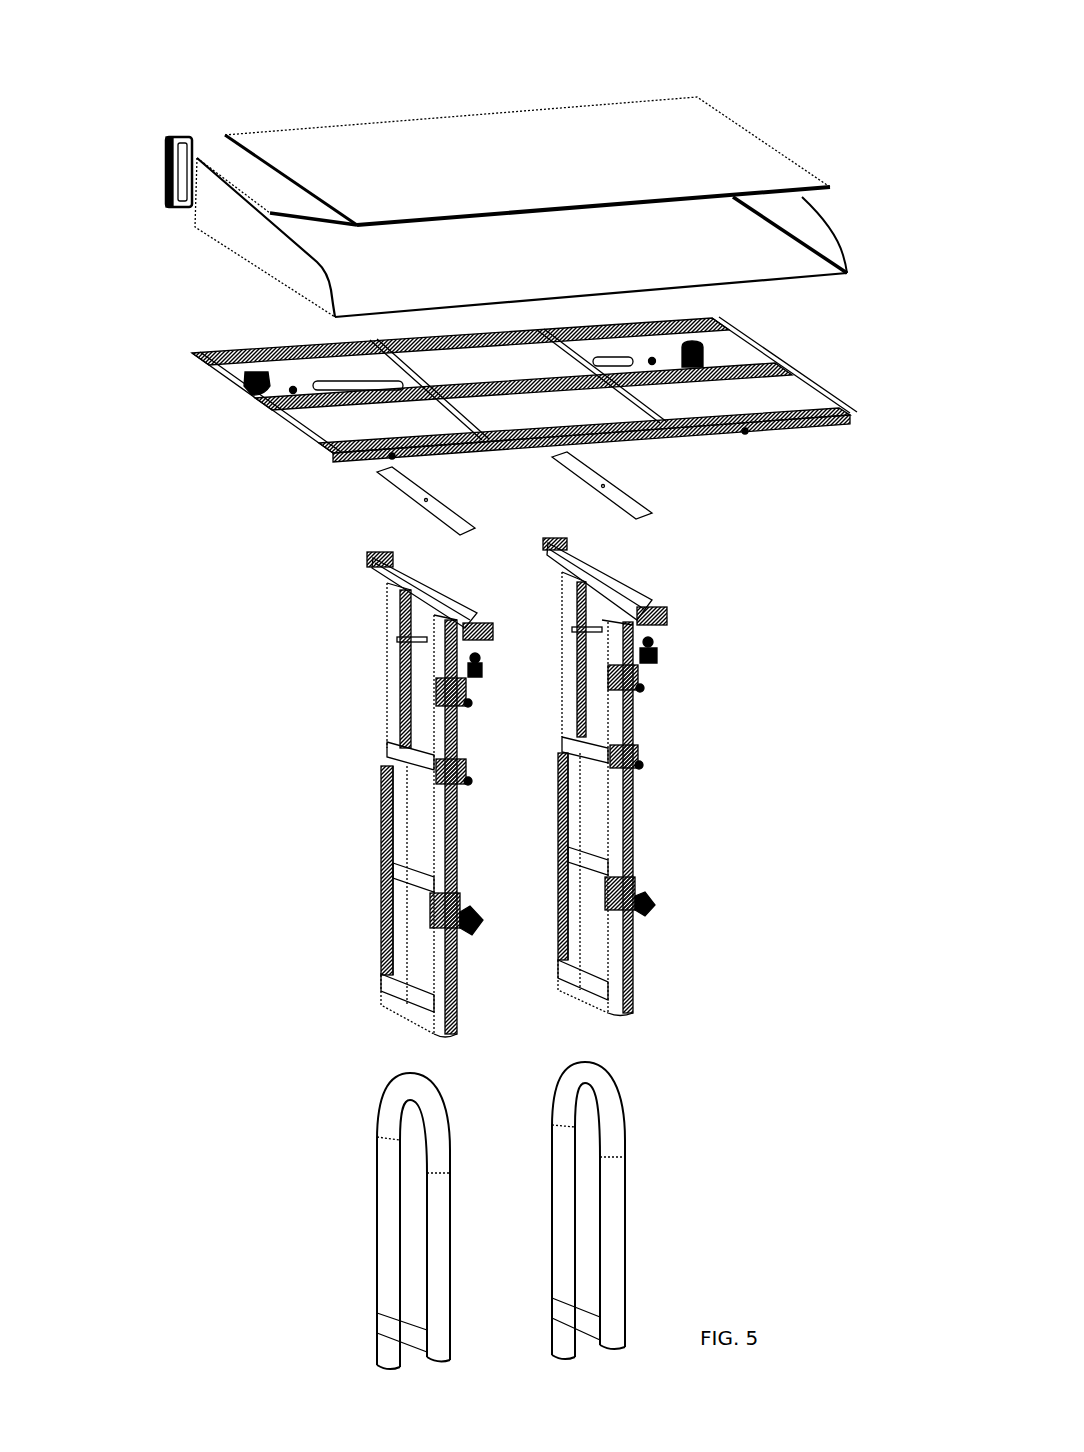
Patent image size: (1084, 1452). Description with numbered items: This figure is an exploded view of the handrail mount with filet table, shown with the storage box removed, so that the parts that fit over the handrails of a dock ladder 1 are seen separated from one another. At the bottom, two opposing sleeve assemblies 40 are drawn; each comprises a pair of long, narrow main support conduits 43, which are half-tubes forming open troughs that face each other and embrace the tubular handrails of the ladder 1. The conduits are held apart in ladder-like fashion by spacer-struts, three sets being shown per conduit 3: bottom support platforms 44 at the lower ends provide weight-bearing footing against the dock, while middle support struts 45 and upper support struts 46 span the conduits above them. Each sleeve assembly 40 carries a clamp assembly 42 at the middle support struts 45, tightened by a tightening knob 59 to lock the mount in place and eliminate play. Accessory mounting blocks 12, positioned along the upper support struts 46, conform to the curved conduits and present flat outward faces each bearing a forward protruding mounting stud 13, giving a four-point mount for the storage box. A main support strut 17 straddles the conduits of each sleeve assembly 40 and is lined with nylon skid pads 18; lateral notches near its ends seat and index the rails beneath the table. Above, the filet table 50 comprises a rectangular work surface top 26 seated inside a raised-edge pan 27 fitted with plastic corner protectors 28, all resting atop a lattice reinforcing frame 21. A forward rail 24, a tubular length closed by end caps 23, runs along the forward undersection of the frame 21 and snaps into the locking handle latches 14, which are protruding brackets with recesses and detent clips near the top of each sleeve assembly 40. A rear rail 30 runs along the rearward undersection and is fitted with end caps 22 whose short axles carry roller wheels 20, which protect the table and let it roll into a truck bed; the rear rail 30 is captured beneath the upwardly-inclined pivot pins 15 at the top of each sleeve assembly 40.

The dock ladder 1 is at (325, 1095).
The conduit 3 is at (445, 730).
The accessory mounting blocks 12 is at (438, 778).
The mounting stud 13 is at (645, 770).
The locking handle latches 14 is at (640, 652).
The pivot pins 15 is at (427, 640).
The main support strut 17 is at (553, 557).
The skid pads 18 is at (590, 492).
The roller wheels 20 is at (253, 378).
The lattice reinforcing frame 21 is at (280, 420).
The end caps with axles 22 is at (292, 386).
The end caps 23 is at (388, 458).
The forward rail 24 is at (742, 434).
The work surface top 26 is at (709, 117).
The raised-edge pan 27 is at (222, 224).
The corner protectors 28 is at (167, 169).
The rear rail 30 is at (425, 375).
The sleeve assemblies 40 is at (553, 595).
The clamp assembly 42 is at (464, 953).
The main support conduits 43 is at (438, 847).
The bottom support platforms 44 is at (398, 1000).
The middle support struts 45 is at (384, 872).
The upper support struts 46 is at (436, 780).
The filet table 50 is at (433, 85).
The tightening knob 59 is at (482, 922).